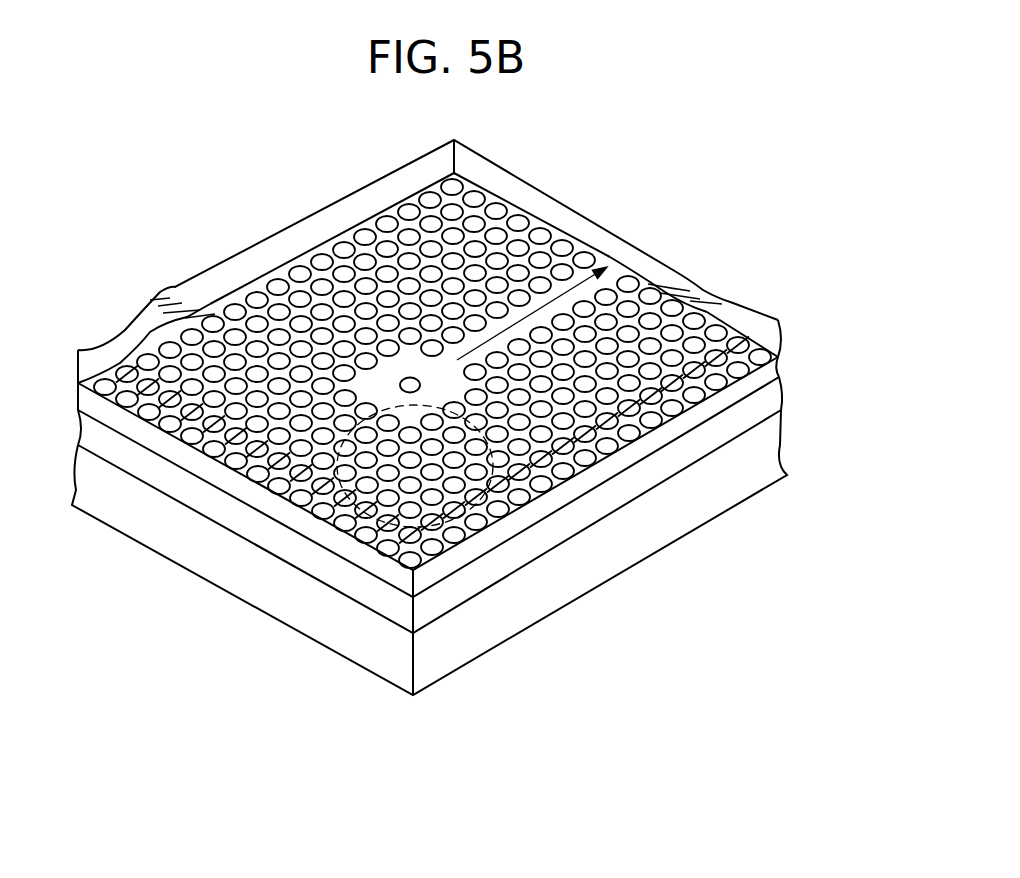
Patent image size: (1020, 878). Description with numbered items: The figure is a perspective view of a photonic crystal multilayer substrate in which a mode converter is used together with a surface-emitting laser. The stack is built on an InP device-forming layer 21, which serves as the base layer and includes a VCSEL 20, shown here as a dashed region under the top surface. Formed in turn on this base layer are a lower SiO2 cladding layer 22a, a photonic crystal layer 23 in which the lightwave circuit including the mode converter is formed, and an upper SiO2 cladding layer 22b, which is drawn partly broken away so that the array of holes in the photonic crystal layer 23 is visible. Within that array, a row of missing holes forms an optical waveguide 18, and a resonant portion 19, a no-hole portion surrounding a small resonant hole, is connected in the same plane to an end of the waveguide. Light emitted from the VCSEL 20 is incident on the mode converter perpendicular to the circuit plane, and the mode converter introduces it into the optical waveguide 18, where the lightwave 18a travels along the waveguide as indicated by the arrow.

The optical waveguide 18 is at (537, 303).
The lightwave 18a is at (605, 266).
The resonant portion 19 is at (410, 362).
The VCSEL 20 is at (347, 497).
The InP device-forming layer 21 is at (655, 525).
The SiO2 cladding layer 22a is at (770, 402).
The SiO2 cladding layer 22b is at (773, 338).
The photonic crystal layer 23 is at (763, 376).